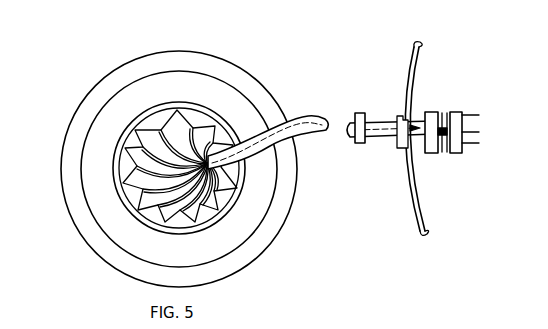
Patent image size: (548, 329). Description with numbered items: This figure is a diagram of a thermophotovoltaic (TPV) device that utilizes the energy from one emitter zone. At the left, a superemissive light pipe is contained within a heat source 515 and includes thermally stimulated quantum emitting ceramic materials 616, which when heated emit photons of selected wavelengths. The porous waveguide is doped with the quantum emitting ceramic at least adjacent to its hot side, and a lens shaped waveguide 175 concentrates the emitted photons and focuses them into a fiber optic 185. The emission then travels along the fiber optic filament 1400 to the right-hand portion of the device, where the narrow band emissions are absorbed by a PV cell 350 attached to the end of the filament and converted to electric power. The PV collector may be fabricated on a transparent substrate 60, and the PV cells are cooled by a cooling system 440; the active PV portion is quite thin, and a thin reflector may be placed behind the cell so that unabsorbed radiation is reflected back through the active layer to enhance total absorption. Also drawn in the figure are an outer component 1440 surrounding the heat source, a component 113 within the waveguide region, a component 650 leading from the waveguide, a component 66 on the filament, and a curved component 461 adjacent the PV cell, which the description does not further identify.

The outer housing 1440 is at (112, 82).
The heat source 515 is at (112, 118).
The thermally stimulated quantum emitting ceramic materials 616 is at (207, 108).
The lens shaped waveguide 175 is at (177, 108).
The vanes 113 is at (132, 196).
The fiber optic 185 is at (228, 181).
The outlet tube 650 is at (297, 118).
The fiber optic filament 1400 is at (386, 138).
The flange 66 is at (360, 144).
The spring band 461 is at (419, 45).
The transparent substrate 60 is at (432, 112).
The PV cell 350 is at (447, 154).
The cooling system 440 is at (463, 113).